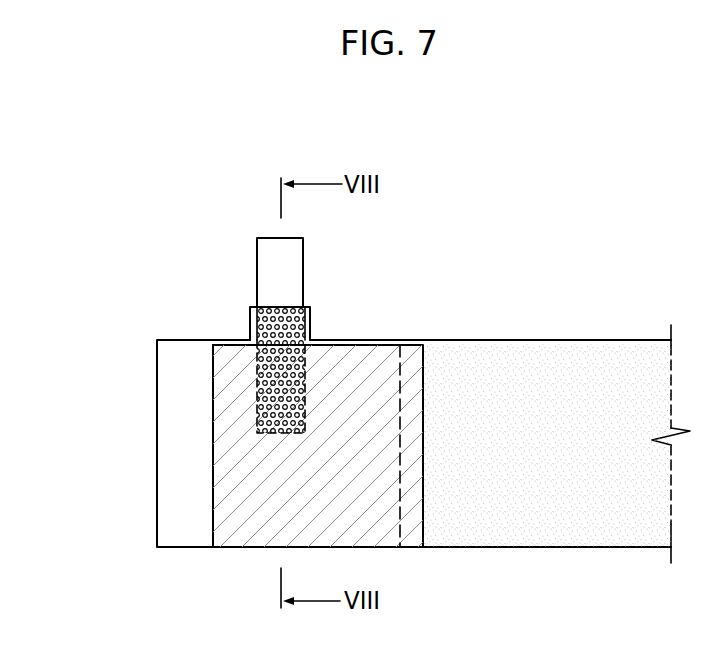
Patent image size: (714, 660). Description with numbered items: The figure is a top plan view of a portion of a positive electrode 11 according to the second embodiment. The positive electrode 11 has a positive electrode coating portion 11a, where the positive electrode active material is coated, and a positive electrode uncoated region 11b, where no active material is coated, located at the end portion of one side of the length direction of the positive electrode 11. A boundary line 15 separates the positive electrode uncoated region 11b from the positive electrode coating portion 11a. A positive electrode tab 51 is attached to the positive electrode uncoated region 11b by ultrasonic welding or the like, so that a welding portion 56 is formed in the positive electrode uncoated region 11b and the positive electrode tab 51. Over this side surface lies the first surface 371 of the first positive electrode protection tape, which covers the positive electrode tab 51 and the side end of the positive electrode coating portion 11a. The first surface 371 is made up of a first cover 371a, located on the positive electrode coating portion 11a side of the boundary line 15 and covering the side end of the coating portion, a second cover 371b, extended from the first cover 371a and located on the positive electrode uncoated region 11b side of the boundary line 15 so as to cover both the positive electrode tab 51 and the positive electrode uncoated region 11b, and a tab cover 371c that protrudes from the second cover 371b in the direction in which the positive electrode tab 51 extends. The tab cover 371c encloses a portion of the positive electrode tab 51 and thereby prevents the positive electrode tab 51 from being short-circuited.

The positive electrode 11 is at (578, 312).
The positive electrode coating portion 11a is at (563, 535).
The positive electrode uncoated region 11b is at (184, 540).
The boundary line 15 is at (402, 377).
The positive electrode tab 51 is at (263, 258).
The welding portion 56 is at (302, 322).
The first surface 371 is at (321, 426).
The first cover 371a is at (413, 488).
The second cover 371b is at (227, 407).
The tab cover 371c is at (251, 322).